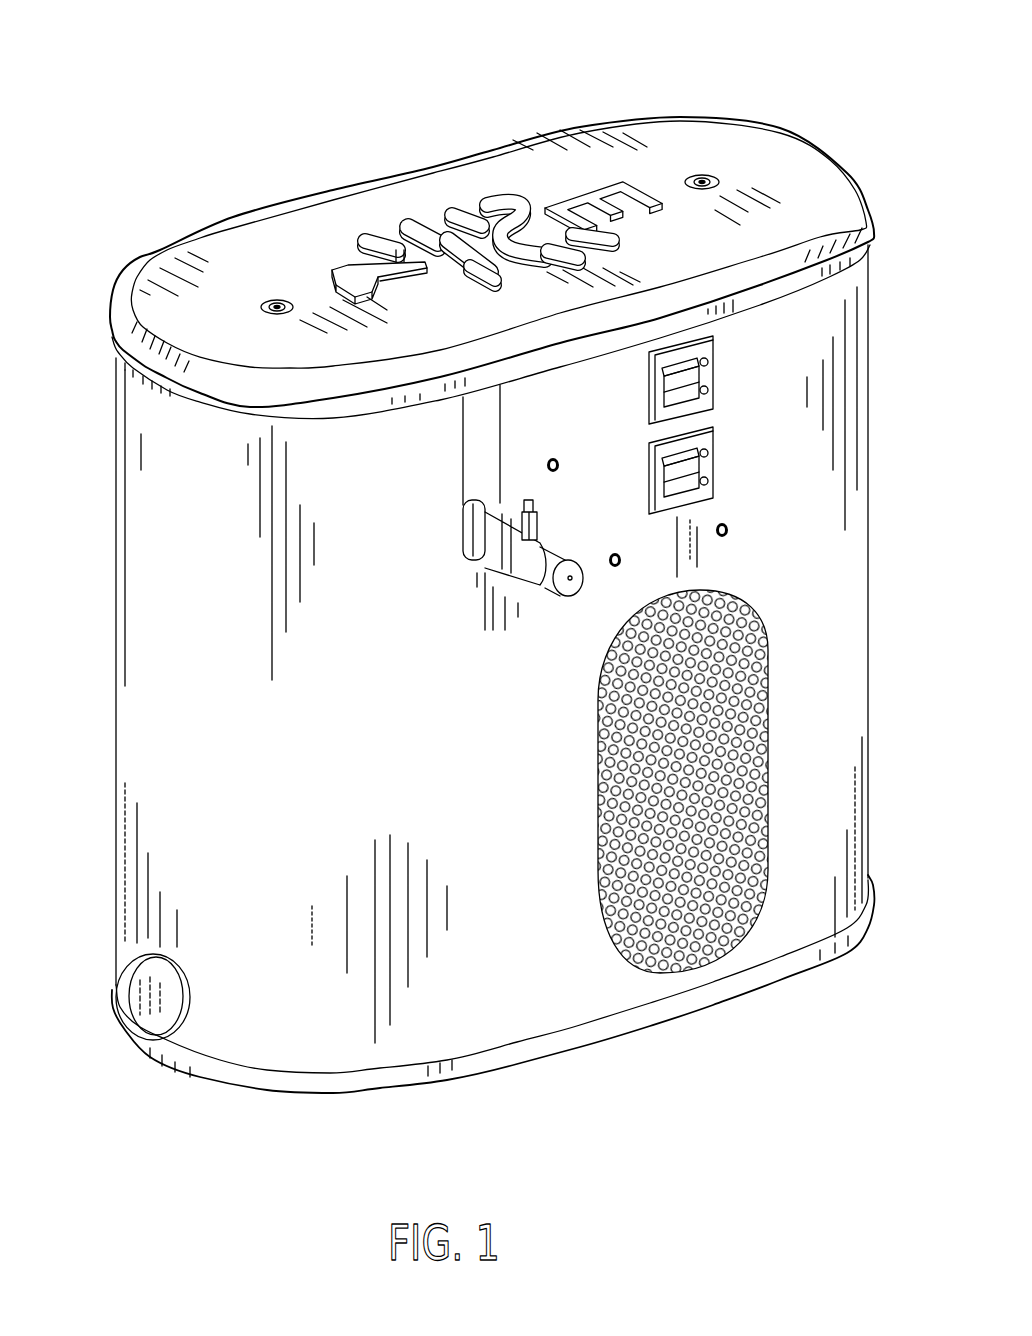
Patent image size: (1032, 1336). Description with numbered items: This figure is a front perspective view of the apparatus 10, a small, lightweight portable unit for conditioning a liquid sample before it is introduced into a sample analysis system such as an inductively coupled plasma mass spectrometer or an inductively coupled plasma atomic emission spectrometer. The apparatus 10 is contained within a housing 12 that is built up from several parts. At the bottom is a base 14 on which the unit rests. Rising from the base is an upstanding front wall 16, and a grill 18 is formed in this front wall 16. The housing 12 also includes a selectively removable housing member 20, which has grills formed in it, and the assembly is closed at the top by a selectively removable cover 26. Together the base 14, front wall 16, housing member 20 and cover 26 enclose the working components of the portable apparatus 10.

The apparatus 10 is at (460, 590).
The housing 12 is at (146, 540).
The base 14 is at (370, 1080).
The front wall 16 is at (434, 748).
The grill 18 is at (757, 897).
The housing member 20 is at (171, 775).
The cover 26 is at (460, 180).